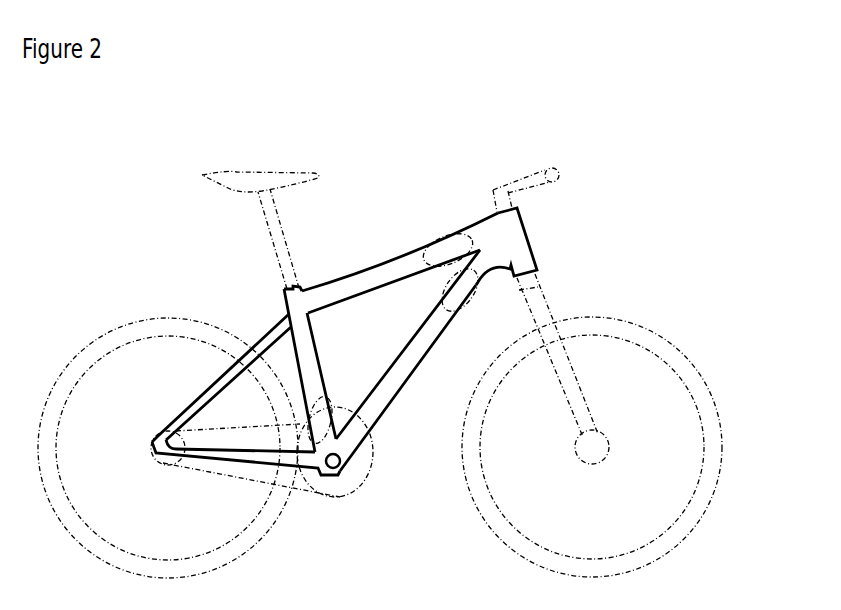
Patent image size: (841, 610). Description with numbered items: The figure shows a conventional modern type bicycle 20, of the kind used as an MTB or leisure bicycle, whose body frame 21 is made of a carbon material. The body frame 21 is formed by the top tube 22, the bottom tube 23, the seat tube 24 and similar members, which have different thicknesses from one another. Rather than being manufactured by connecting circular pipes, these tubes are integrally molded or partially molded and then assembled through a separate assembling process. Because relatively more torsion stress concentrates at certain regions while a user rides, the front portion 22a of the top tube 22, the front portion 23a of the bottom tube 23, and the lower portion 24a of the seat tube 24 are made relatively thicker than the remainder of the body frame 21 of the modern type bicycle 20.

The modern type bicycle 20 is at (618, 189).
The body frame 21 is at (404, 248).
The top tube 22 is at (370, 274).
The front portion of the top tube 22a is at (447, 233).
The bottom tube 23 is at (423, 360).
The front portion of the bottom tube 23a is at (482, 306).
The seat tube 24 is at (296, 348).
The seat stay joint portion 24a is at (372, 425).